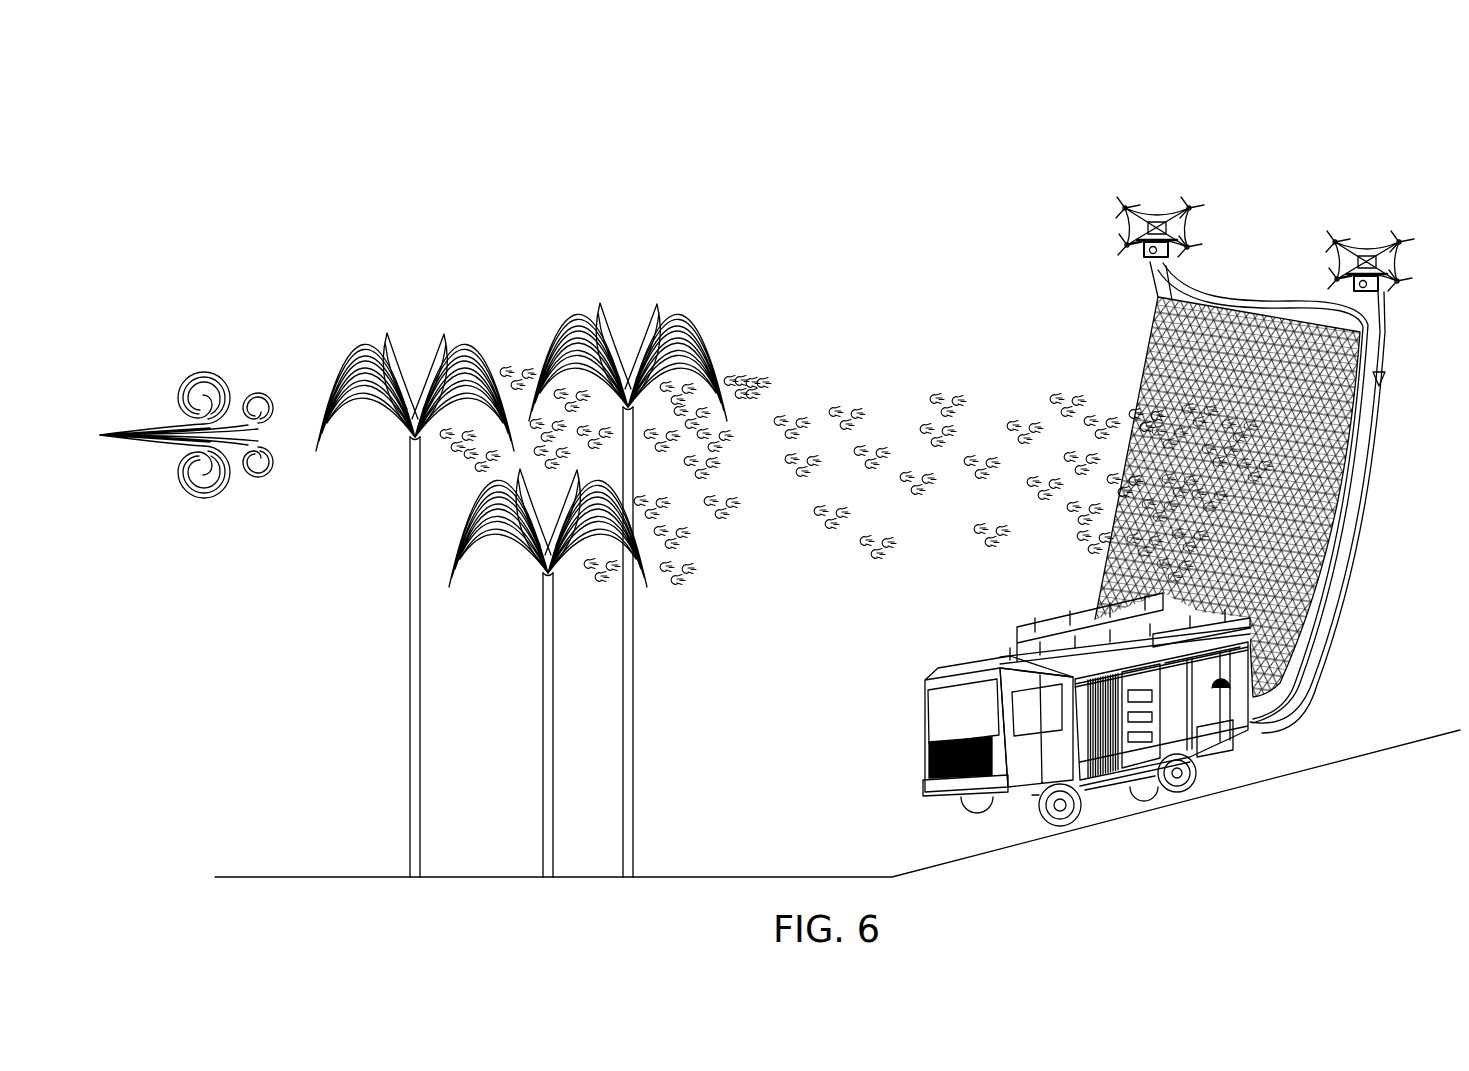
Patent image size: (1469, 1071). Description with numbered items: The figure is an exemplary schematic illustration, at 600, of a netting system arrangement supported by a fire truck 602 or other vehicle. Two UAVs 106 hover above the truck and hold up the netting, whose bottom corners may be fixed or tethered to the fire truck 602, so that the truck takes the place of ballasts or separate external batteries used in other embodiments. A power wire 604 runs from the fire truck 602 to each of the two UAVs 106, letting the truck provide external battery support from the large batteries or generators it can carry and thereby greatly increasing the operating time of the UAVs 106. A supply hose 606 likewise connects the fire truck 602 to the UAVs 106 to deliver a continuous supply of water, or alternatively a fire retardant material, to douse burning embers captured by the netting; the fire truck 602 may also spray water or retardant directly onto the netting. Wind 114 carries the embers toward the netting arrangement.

The netting system arrangement 600 is at (935, 84).
The UAV 106 is at (1157, 217).
The wind 114 is at (193, 358).
The fire truck 602 is at (962, 653).
The power wire 604 is at (1346, 493).
The supply hose 606 is at (1356, 543).